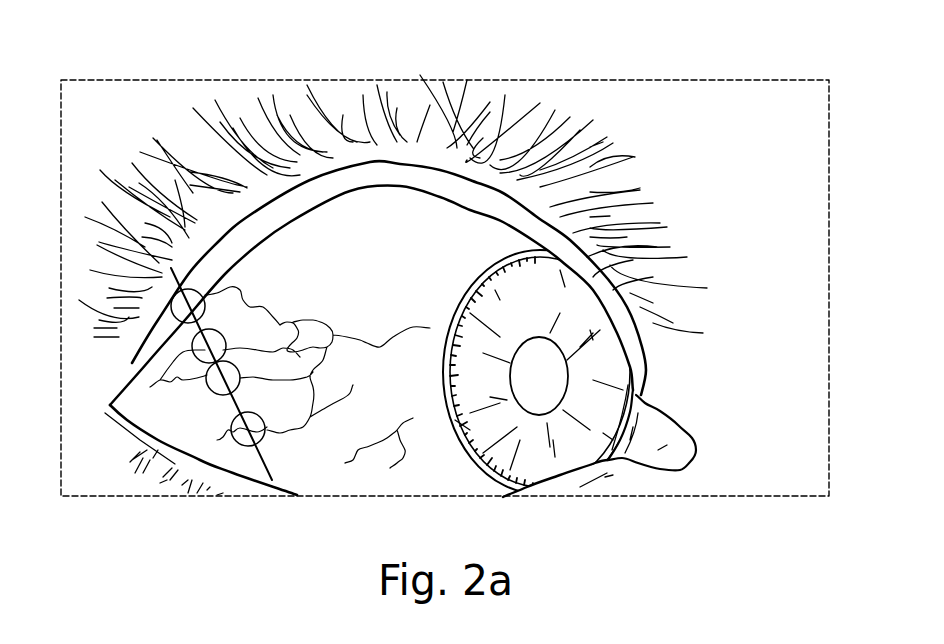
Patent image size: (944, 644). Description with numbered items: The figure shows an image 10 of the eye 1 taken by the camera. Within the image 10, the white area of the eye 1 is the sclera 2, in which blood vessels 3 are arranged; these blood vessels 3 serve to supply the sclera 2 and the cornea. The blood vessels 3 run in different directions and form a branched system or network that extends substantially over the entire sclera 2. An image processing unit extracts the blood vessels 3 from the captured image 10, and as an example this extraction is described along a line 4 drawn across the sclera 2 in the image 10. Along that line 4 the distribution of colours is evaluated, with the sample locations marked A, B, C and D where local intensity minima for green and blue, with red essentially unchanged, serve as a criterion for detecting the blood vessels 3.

The image 10 is at (85, 53).
The sclera 2 is at (432, 240).
The eye 1 is at (405, 296).
The blood vessels 3 is at (300, 353).
The line 4 is at (257, 471).